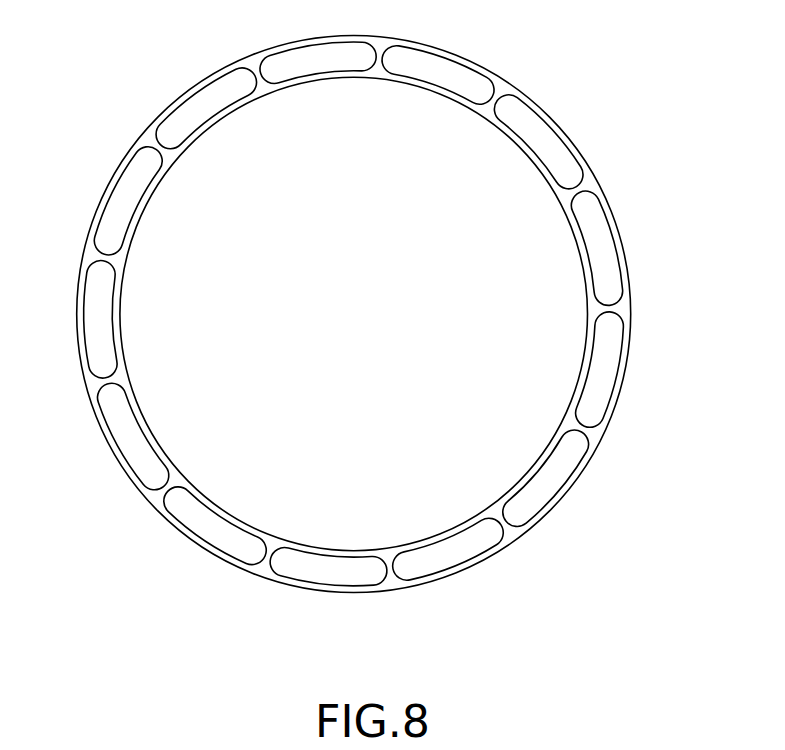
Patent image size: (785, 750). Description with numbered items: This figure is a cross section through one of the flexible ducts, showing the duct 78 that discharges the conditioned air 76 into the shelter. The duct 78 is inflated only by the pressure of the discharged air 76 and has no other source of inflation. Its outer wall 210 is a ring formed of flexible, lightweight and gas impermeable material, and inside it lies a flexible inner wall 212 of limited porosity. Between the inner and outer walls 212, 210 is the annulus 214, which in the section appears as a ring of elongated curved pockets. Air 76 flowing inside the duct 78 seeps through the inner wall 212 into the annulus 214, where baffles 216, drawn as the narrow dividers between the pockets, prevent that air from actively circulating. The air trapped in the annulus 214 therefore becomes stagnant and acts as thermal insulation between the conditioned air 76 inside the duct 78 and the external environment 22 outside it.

The external environment 22 is at (83, 132).
The conditioned air 76 is at (365, 334).
The duct 78 is at (532, 102).
The outer wall 210 is at (625, 378).
The inner wall 212 is at (153, 433).
The annulus 214 is at (210, 97).
The baffles 216 is at (568, 180).